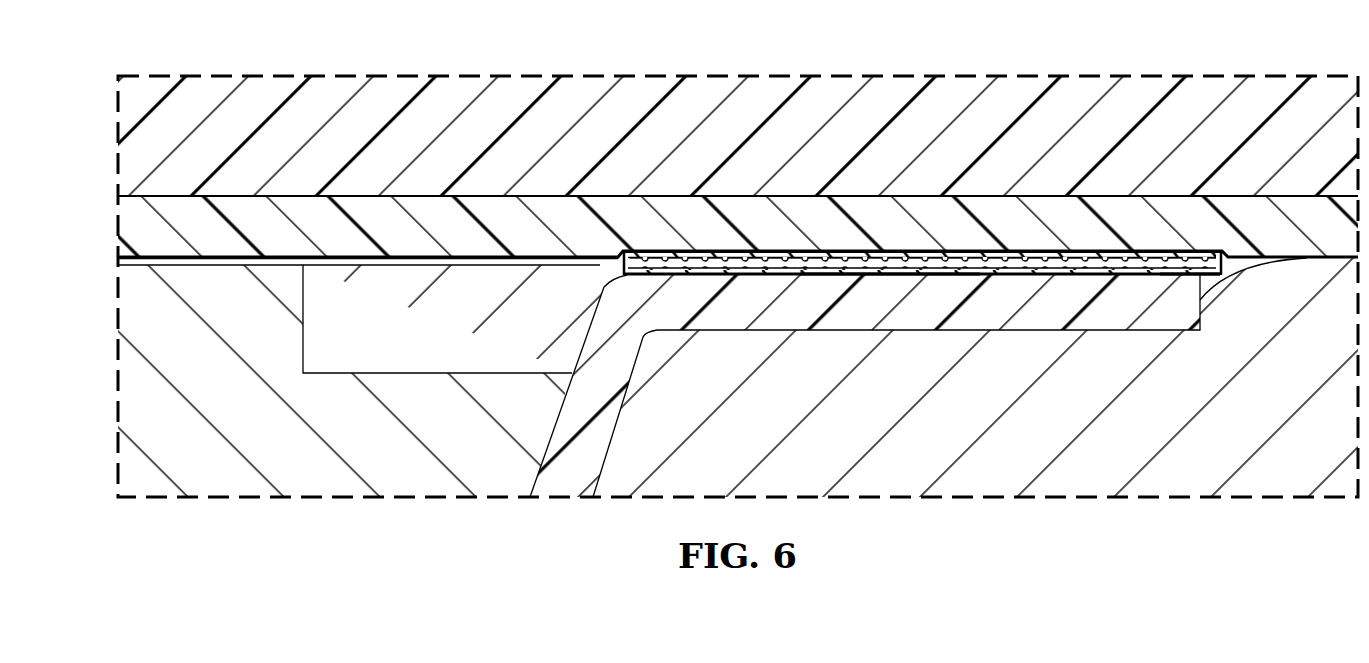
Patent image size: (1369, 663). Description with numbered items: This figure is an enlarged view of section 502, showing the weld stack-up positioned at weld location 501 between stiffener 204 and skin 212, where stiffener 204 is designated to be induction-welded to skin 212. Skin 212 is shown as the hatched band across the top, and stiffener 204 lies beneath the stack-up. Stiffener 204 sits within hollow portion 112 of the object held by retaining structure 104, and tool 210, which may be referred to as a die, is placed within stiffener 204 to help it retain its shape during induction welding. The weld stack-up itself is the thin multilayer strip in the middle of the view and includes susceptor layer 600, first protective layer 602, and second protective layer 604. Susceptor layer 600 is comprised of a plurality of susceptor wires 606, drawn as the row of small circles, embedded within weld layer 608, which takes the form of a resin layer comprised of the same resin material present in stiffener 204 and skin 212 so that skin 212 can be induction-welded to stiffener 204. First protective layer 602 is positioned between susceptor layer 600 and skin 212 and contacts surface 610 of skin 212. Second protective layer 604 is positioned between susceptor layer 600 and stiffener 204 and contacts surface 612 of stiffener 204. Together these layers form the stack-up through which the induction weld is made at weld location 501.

The section 502 is at (720, 70).
The skin 212 is at (678, 207).
The surface of skin 610 is at (590, 267).
The surface of stiffener 612 is at (600, 264).
The tool 210 is at (133, 388).
The stiffener 204 is at (728, 318).
The hollow portion 112 is at (594, 460).
The retaining structure 104 is at (893, 475).
The first protective layer 602 is at (973, 250).
The weld layer 608 is at (1093, 262).
The susceptor layer 600 is at (812, 260).
The second protective layer 604 is at (1017, 271).
The weld location 501 is at (888, 292).
The susceptor wires 606 is at (1182, 273).